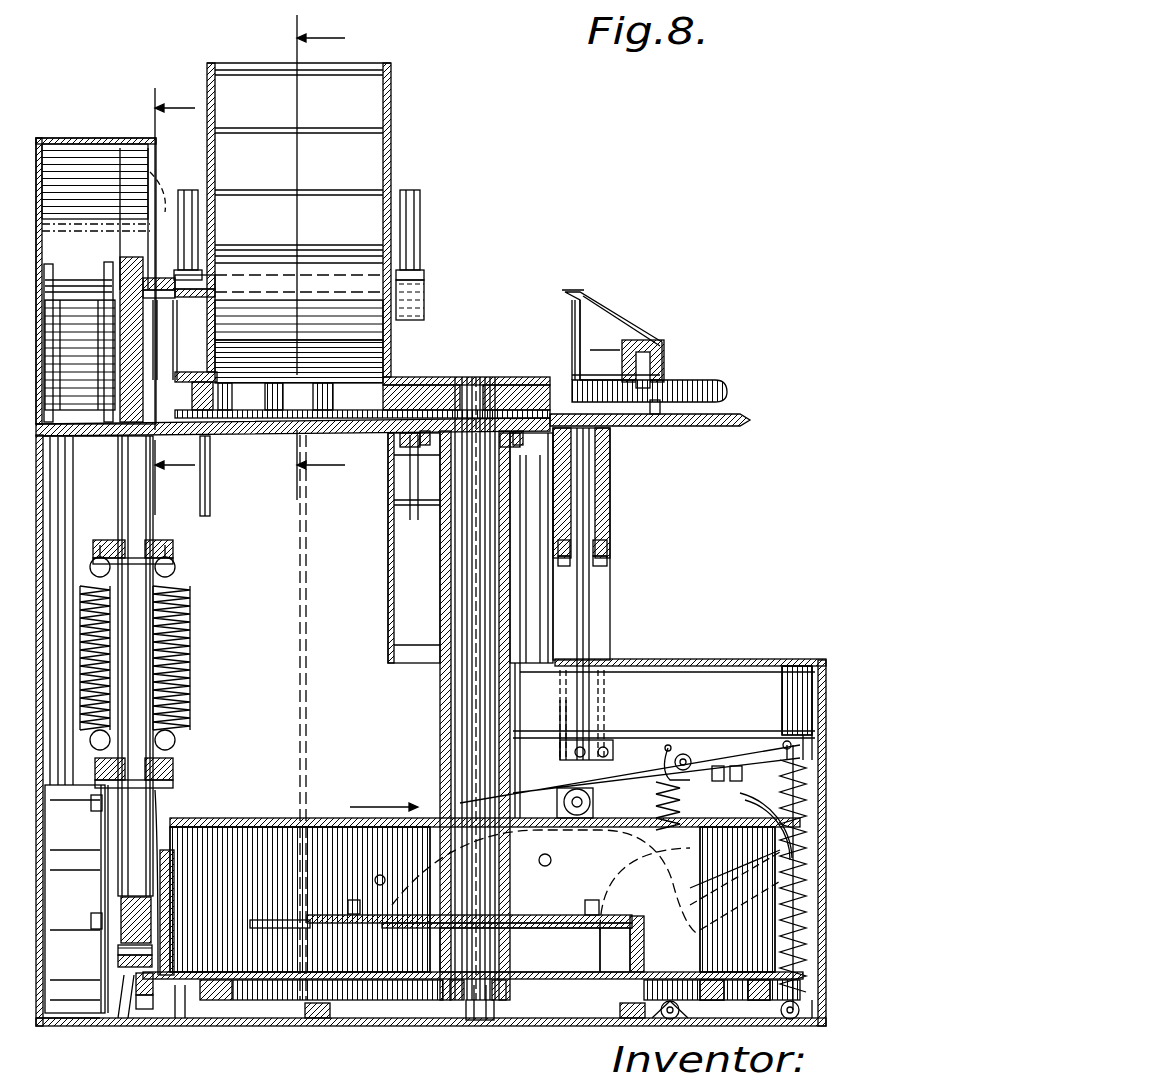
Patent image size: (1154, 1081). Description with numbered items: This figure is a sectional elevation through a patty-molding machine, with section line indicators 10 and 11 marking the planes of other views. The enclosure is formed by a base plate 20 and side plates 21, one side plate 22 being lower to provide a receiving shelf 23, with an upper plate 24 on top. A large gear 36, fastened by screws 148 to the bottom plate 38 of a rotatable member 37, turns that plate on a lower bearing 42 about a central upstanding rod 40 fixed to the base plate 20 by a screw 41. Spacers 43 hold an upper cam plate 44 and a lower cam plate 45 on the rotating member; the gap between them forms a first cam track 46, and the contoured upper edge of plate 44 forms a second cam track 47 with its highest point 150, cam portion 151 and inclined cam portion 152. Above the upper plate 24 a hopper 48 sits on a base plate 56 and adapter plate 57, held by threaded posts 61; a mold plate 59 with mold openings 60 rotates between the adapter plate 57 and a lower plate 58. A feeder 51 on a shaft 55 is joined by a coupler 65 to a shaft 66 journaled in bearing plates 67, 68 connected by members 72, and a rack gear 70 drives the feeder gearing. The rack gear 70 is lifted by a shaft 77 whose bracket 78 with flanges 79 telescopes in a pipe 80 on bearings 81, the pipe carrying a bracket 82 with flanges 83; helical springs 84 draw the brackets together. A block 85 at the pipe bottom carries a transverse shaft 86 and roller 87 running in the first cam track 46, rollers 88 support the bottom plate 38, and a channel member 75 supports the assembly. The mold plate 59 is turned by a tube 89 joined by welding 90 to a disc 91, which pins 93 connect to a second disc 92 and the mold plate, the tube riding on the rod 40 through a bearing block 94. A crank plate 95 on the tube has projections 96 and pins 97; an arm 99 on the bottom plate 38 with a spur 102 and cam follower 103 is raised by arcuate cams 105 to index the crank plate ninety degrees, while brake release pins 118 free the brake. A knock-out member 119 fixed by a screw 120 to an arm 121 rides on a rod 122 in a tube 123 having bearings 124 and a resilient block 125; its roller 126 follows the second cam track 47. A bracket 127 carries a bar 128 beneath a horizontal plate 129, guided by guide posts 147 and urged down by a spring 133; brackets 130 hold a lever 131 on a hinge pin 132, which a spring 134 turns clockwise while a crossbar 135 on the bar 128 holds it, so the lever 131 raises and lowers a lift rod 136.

The section line 10- 10 is at (321, 257).
The section line 11- 11 is at (175, 301).
The base plate 20 is at (270, 1026).
The side plates 21 is at (40, 1018).
The side plate 22 is at (822, 1020).
The receiving shelf 23 is at (676, 660).
The upper plate 24 is at (216, 476).
The large gear 36 is at (215, 1002).
The rotatable member 37 is at (312, 850).
The bottom plate 38 is at (188, 1020).
The upstanding rod 40 is at (480, 640).
The screw 41 is at (472, 1020).
The lower bearing 42 is at (496, 988).
The spacers 43 is at (545, 854).
The upper cam plate 44 is at (745, 800).
The lower cam plate 45 is at (680, 1020).
The first cam track 46 is at (630, 840).
The second cam track 47 is at (372, 807).
The hopper 48 is at (392, 131).
The feeder 51 is at (312, 243).
The shaft 55 is at (200, 292).
The base plate 56 is at (493, 377).
The adapter plate 57 is at (524, 385).
The lower plate 58 is at (266, 431).
The mold plate 59 is at (752, 418).
The mold openings 60 is at (385, 430).
The threaded posts 61 is at (186, 190).
The coupler 65 is at (160, 278).
The shaft 66 is at (74, 300).
The bearing plate 67 is at (49, 264).
The bearing plate 68 is at (105, 264).
The rack gear 70 is at (135, 258).
The members 72 is at (80, 360).
The channel member 75 is at (62, 880).
The shaft 77 is at (118, 482).
The bracket 78 is at (145, 545).
The flanges 79 is at (94, 563).
The pipe 80 is at (160, 800).
The bearings 81 is at (160, 586).
The bracket 82 is at (174, 782).
The flanges 83 is at (174, 766).
The helical springs 84 is at (110, 660).
The block 85 is at (121, 908).
The transverse shaft 86 is at (118, 952).
The roller 87 is at (148, 1014).
The rollers 88 is at (128, 1018).
The tube 89 is at (435, 618).
The welding 90 is at (552, 505).
The disc 91 is at (405, 460).
The second disc 92 is at (430, 480).
The pins 93 is at (412, 448).
The bearing block 94 is at (505, 950).
The crank plate 95 is at (605, 905).
The peripheral projections 96 is at (348, 907).
The pins 97 is at (380, 914).
The arm 99 is at (630, 953).
The spur 102 is at (628, 935).
The cam follower 103 is at (645, 988).
The arcuate cams 105 is at (310, 1020).
The brake release pins 118 is at (345, 1002).
The knock-out member 119 is at (728, 392).
The screw 120 is at (665, 376).
The arm 121 is at (610, 318).
The rod 122 is at (600, 535).
The tube 123 is at (608, 548).
The bearings 124 is at (612, 505).
The resilient block 125 is at (611, 450).
The roller 126 is at (562, 800).
The bracket 127 is at (574, 752).
The bar 128 is at (628, 745).
The horizontal plate 129 is at (722, 742).
The brackets 130 is at (670, 745).
The lever 131 is at (748, 750).
The hinge pin 132 is at (684, 752).
The spring 133 is at (680, 805).
The spring 134 is at (715, 905).
The crossbar 135 is at (713, 781).
The lift rod 136 is at (470, 725).
The guide posts 147 is at (796, 666).
The screws 148 is at (786, 1020).
The highest point 150 is at (680, 848).
The cam portion 151 is at (200, 825).
The inclined cam portion 152 is at (778, 834).